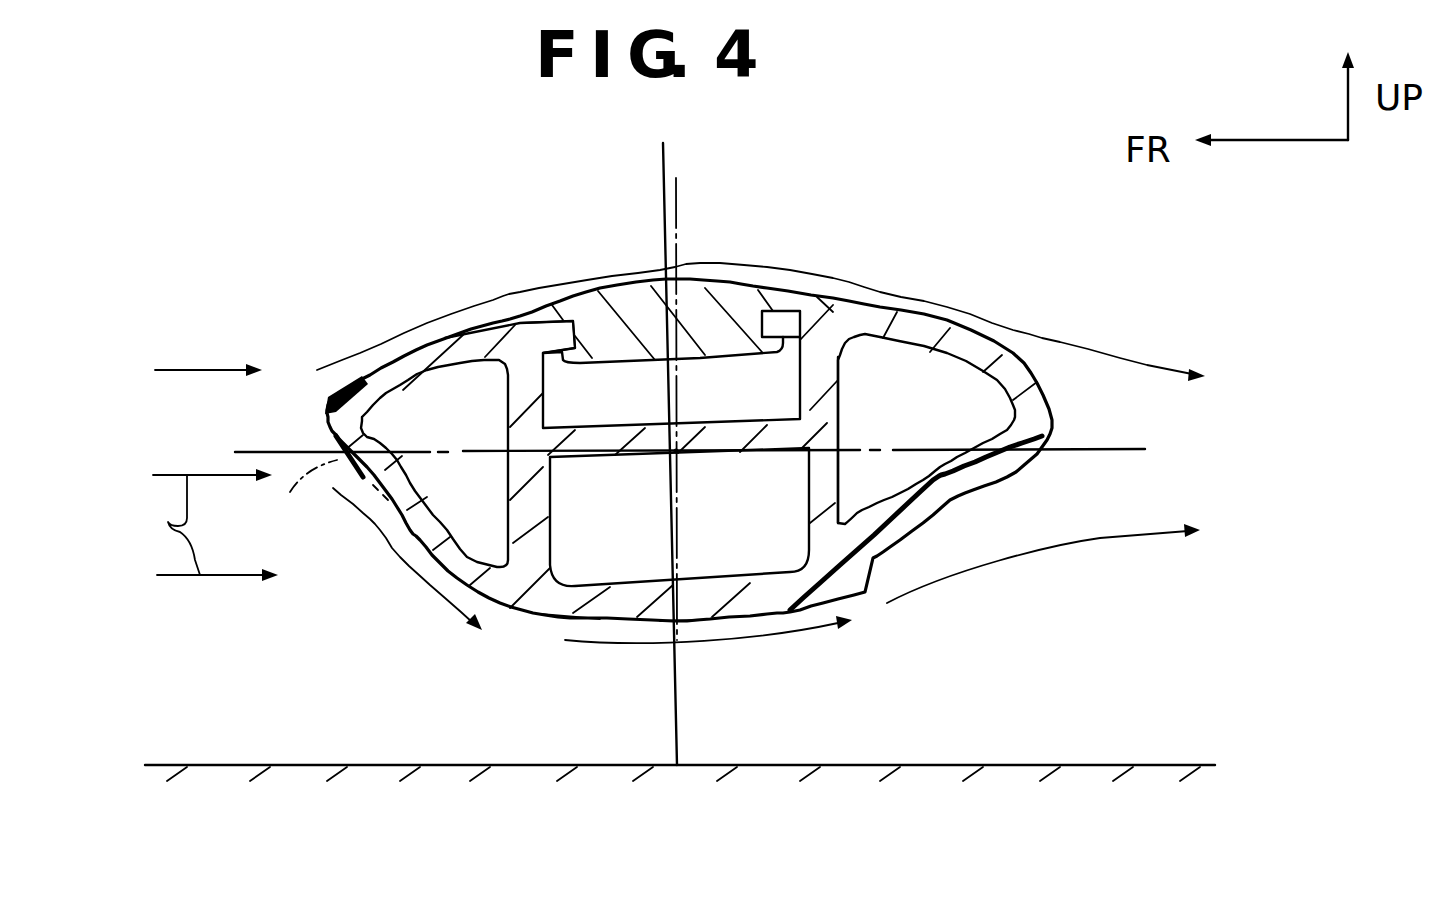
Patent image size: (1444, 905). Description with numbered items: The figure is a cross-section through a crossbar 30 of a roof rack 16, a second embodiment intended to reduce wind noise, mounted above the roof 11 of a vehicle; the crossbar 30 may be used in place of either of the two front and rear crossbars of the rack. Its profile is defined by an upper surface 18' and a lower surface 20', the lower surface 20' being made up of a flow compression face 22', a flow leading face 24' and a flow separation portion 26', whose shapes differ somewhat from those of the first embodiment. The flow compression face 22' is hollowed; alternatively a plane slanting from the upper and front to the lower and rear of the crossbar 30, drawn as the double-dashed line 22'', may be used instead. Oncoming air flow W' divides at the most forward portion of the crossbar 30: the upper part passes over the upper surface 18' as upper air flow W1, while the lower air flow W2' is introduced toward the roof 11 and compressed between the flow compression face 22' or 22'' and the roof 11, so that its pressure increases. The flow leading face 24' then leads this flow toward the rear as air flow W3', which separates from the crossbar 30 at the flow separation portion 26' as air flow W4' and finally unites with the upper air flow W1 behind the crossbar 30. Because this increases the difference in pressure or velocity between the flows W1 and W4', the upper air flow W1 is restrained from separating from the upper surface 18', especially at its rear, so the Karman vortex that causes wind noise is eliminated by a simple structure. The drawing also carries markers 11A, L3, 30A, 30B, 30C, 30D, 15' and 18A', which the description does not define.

The roof 11 is at (322, 752).
The roof surface 11A is at (452, 764).
The vertical reference line L3 is at (663, 146).
The vertical center axis of fairing 30D is at (680, 190).
The horizontal center line of fairing 30C is at (1115, 449).
The crossbar 30 is at (944, 316).
The front leading edge of fairing 30B is at (327, 410).
The center of fairing 30A is at (680, 455).
The upper surface 18' is at (599, 434).
The top cover block 15' is at (662, 281).
The engagement flanges 18A' is at (660, 279).
The flow separation portion 26' is at (916, 472).
The flow compression face 22' is at (345, 511).
The plane slanting from upper front to lower rear 22'' is at (299, 498).
The lower surface 20' is at (556, 663).
The flow leading face 24' is at (691, 664).
The roof rack 16 is at (892, 240).
The upper air flow W1 is at (800, 278).
The air flow W' is at (198, 429).
The lower air flow W2' is at (402, 567).
The rearward air flow W3' is at (708, 662).
The separated air flow W4' is at (1043, 578).